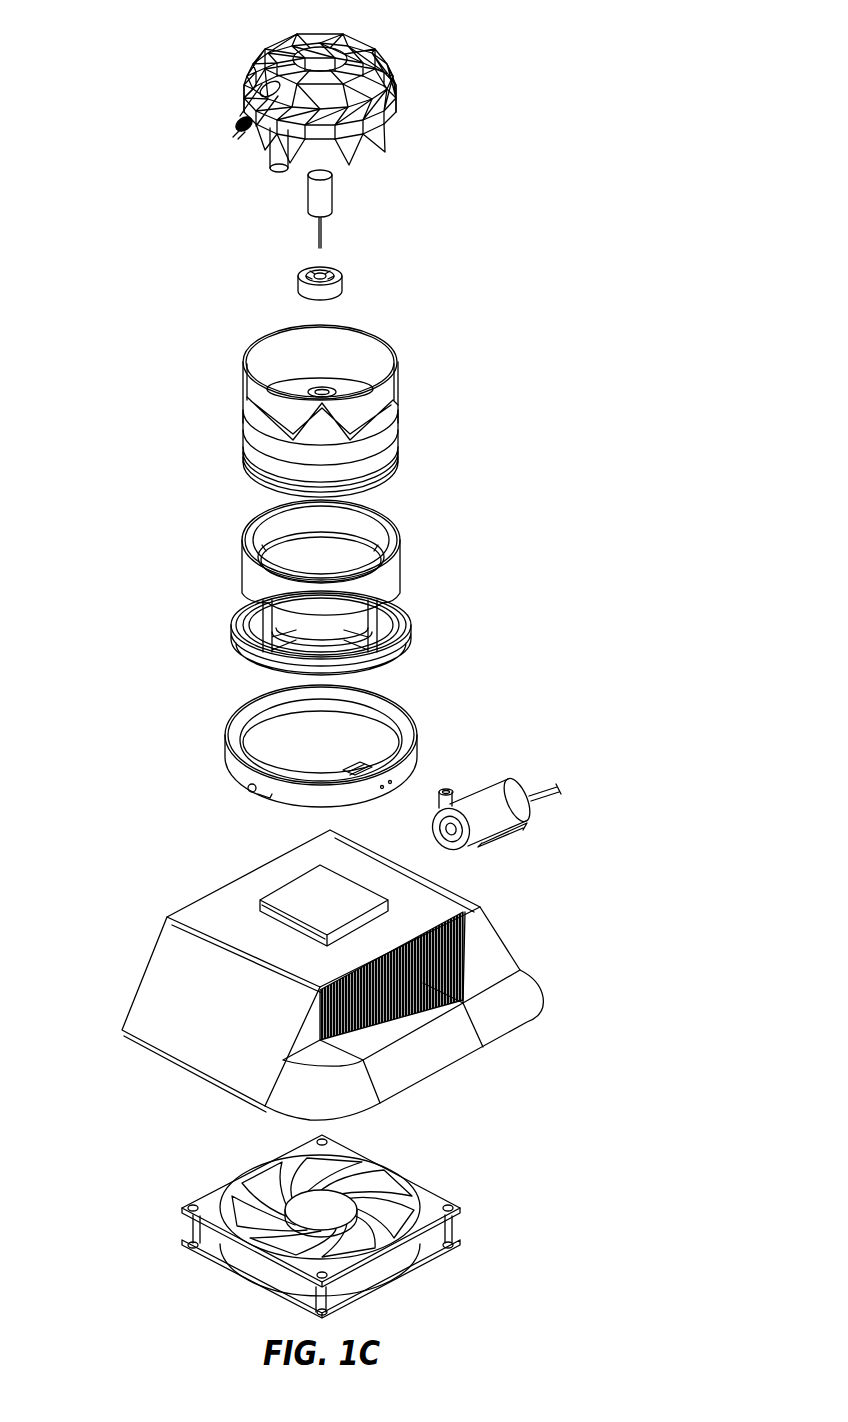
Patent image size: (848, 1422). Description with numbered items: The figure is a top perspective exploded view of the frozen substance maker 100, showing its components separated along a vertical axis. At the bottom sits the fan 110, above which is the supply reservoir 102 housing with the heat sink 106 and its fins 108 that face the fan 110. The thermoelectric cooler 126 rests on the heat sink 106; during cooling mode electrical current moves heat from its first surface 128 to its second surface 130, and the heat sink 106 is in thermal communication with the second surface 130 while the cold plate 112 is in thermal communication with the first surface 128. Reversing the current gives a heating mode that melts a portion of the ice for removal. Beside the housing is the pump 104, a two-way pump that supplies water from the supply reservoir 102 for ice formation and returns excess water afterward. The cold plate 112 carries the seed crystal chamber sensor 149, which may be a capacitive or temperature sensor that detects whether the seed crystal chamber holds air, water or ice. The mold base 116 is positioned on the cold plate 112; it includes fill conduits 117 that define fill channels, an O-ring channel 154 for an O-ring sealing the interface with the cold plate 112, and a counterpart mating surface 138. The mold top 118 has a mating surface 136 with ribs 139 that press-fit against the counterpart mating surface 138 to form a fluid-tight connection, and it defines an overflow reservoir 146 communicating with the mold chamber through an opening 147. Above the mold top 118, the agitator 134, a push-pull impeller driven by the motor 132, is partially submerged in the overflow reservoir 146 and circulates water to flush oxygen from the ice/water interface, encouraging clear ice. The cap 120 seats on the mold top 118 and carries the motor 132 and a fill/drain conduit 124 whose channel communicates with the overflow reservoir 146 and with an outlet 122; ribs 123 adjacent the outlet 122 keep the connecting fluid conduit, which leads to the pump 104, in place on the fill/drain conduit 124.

The frozen substance maker 100 is at (120, 37).
The supply reservoir 102 is at (344, 975).
The pump 104 is at (510, 793).
The heat sink 106 is at (430, 910).
The fins 108 is at (314, 1020).
The fan 110 is at (212, 1200).
The cold plate 112 is at (355, 746).
The mold base 116 is at (317, 590).
The fill conduits 117 is at (265, 635).
The mold top 118 is at (362, 401).
The cap 120 is at (402, 102).
The outlet 122 is at (229, 137).
The ribs 123 is at (234, 122).
The fill/drain conduit 124 is at (270, 157).
The thermoelectric cooler 126 is at (258, 903).
The first surface 128 is at (288, 895).
The second surface 130 is at (283, 920).
The motor 132 is at (335, 200).
The agitator 134 is at (345, 287).
The mating surface 136 is at (393, 460).
The counterpart mating surface 138 is at (382, 530).
The ribs 139 is at (397, 468).
The overflow reservoir 146 is at (352, 362).
The opening 147 is at (301, 388).
The seed crystal chamber sensor 149 is at (396, 750).
The O-ring channel 154 is at (236, 645).